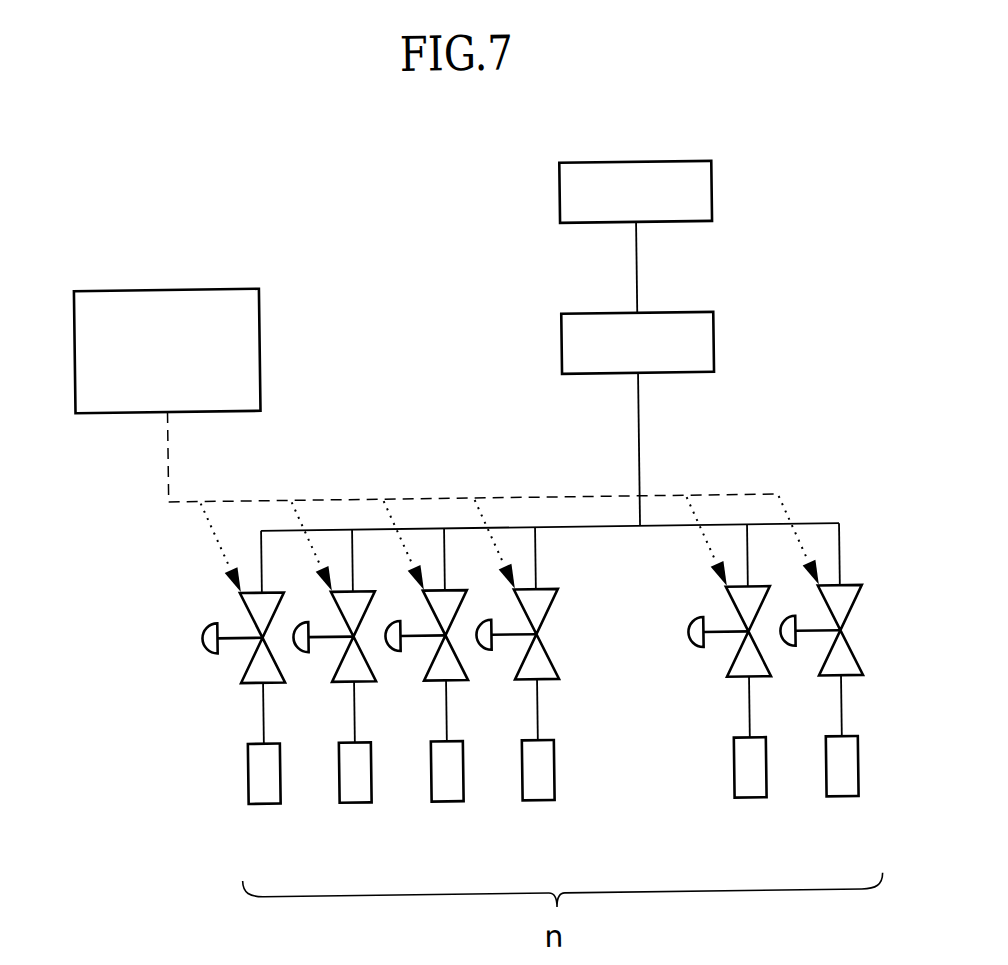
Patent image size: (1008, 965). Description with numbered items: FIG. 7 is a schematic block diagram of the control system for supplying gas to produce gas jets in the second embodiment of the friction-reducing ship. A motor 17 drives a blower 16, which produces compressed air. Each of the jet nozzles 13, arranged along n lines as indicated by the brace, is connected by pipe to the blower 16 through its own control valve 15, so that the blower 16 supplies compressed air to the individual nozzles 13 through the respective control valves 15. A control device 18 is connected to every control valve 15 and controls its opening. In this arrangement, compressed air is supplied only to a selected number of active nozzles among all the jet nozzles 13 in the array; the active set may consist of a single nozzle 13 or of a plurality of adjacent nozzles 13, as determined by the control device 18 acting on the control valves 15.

The jet nozzle 13 is at (529, 763).
The control valve 15 is at (530, 611).
The blower 16 is at (565, 344).
The motor 17 is at (565, 183).
The control device 18 is at (171, 285).